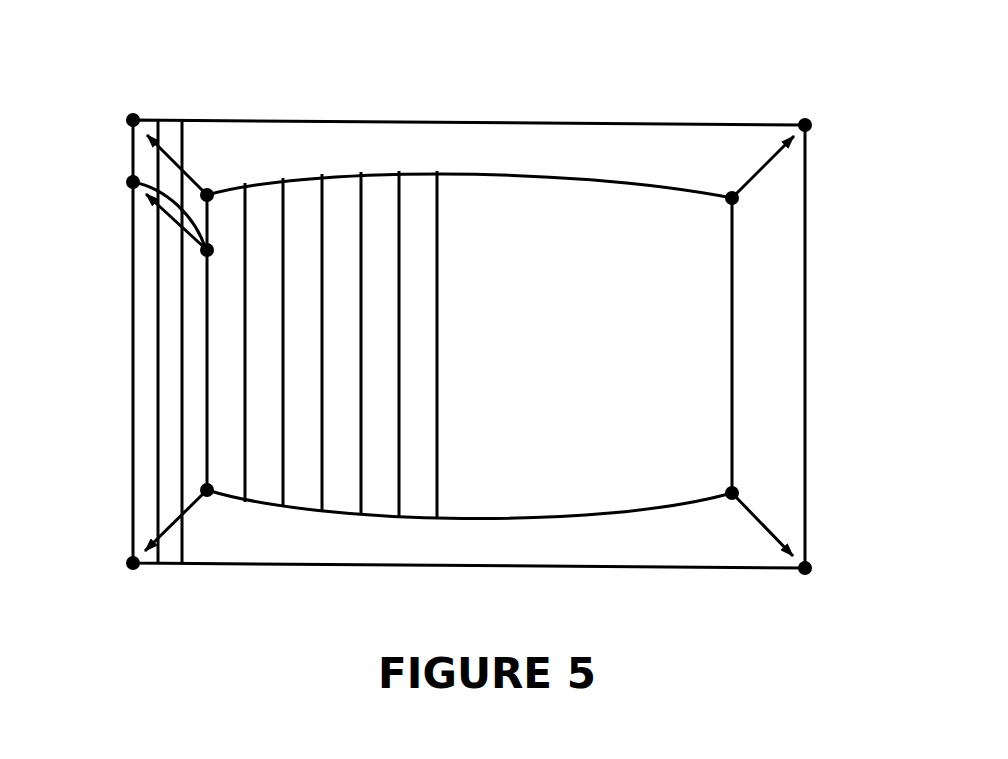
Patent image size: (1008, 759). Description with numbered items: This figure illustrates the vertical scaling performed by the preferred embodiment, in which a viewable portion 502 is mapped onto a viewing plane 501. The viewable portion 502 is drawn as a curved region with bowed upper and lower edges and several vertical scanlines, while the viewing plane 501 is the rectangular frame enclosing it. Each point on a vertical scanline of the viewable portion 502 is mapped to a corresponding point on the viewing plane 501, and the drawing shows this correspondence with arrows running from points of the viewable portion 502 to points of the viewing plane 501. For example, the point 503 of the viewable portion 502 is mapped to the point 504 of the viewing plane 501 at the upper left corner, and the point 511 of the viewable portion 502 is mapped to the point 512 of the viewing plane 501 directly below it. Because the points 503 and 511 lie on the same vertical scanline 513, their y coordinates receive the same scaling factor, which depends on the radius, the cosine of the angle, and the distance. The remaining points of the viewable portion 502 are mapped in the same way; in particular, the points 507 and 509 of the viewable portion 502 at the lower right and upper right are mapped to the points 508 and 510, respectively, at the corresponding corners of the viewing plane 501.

The viewing plane 501 is at (836, 203).
The viewable portion 502 is at (628, 355).
The point 503 is at (188, 208).
The point 504 is at (128, 118).
The point 507 is at (732, 493).
The point 508 is at (806, 570).
The point 509 is at (732, 198).
The point 510 is at (806, 124).
The point 511 is at (206, 250).
The point 512 is at (128, 181).
The vertical scanline 513 is at (194, 357).